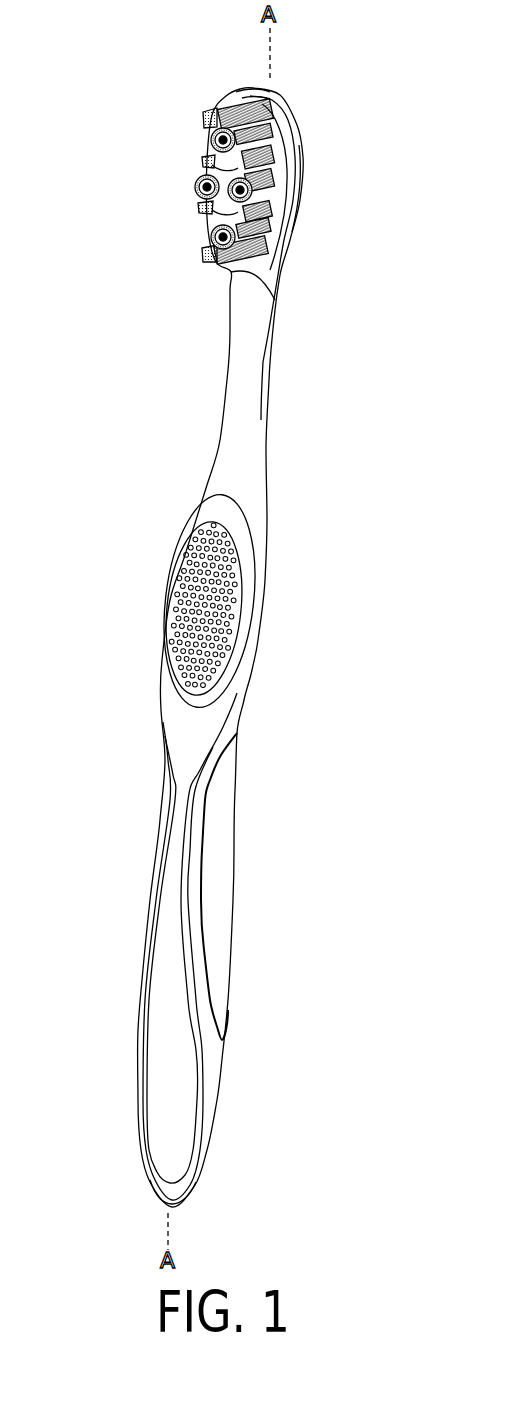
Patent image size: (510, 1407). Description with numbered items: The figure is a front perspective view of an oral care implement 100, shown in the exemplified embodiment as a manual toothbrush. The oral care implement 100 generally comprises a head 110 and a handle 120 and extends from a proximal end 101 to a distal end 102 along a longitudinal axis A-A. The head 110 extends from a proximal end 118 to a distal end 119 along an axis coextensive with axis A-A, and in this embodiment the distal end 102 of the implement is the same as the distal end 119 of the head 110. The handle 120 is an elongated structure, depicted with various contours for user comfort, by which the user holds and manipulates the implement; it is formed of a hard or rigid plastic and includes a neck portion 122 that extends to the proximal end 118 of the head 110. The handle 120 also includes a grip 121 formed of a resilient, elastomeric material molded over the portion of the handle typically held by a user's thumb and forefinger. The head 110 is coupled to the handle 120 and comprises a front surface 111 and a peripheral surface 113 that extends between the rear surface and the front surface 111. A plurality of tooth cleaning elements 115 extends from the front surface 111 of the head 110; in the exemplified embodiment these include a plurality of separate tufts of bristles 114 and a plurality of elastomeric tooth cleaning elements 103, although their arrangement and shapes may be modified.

The oral care implement 100 is at (125, 148).
The proximal end 101 is at (172, 1210).
The distal end 102 is at (266, 80).
The distal end 119 is at (226, 50).
The elastomeric tooth cleaning elements 103 is at (236, 158).
The head 110 is at (271, 107).
The front surface 111 is at (275, 138).
The peripheral surface 113 is at (292, 207).
The tufts of bristles 114 is at (267, 182).
The tooth cleaning elements 115 is at (200, 203).
The proximal end 118 is at (252, 287).
The handle 120 is at (215, 858).
The grip 121 is at (168, 625).
The neck portion 122 is at (247, 350).